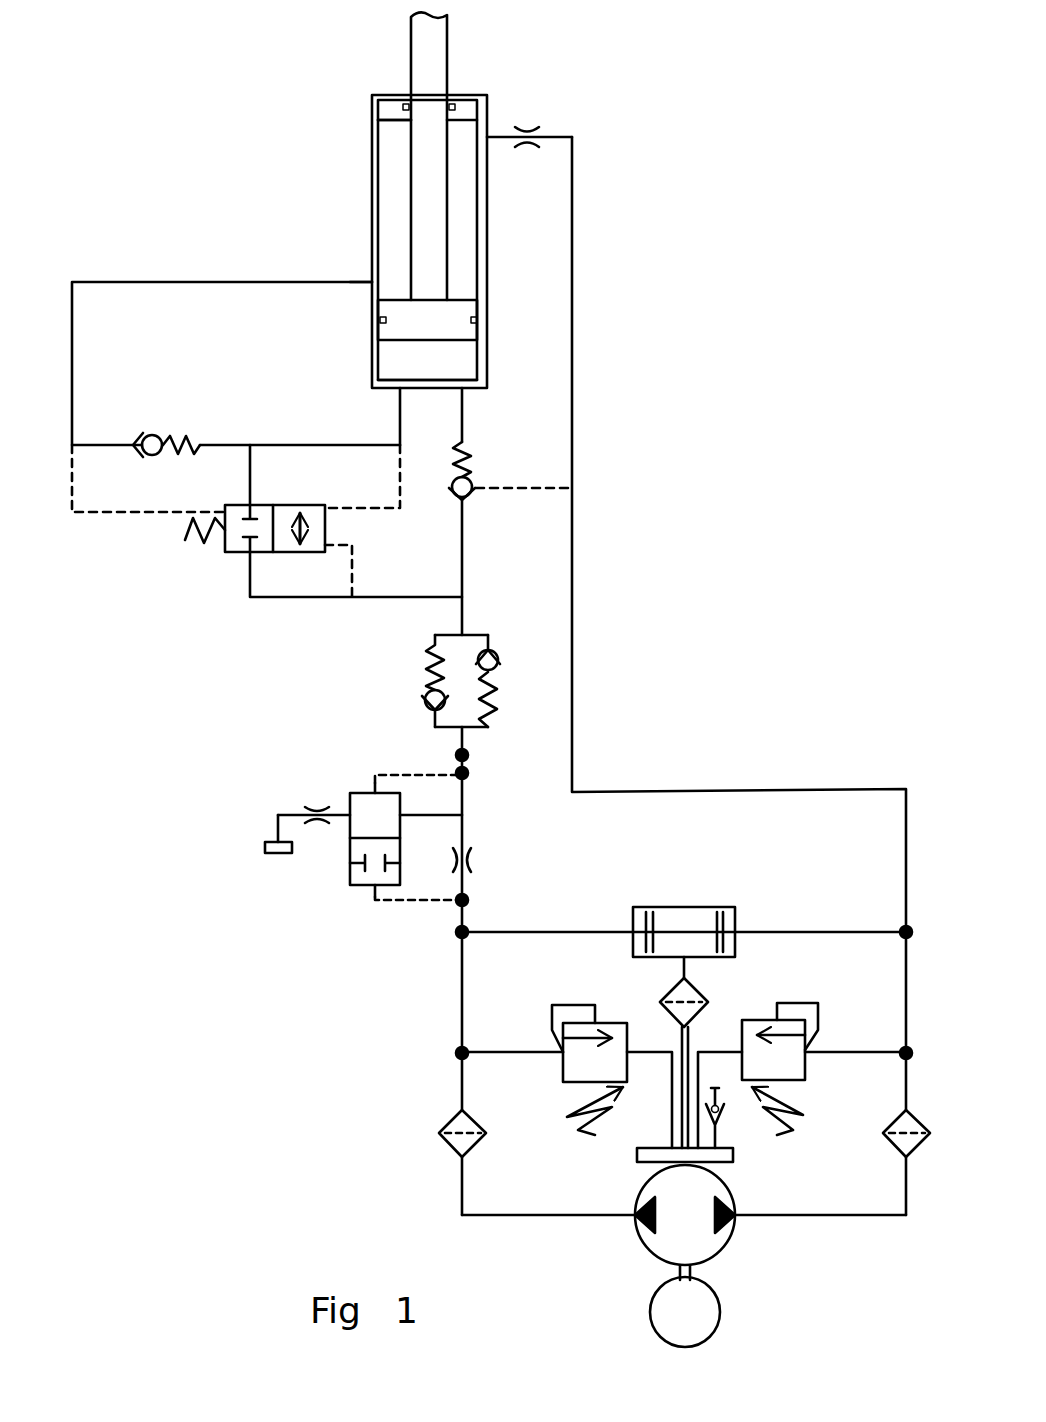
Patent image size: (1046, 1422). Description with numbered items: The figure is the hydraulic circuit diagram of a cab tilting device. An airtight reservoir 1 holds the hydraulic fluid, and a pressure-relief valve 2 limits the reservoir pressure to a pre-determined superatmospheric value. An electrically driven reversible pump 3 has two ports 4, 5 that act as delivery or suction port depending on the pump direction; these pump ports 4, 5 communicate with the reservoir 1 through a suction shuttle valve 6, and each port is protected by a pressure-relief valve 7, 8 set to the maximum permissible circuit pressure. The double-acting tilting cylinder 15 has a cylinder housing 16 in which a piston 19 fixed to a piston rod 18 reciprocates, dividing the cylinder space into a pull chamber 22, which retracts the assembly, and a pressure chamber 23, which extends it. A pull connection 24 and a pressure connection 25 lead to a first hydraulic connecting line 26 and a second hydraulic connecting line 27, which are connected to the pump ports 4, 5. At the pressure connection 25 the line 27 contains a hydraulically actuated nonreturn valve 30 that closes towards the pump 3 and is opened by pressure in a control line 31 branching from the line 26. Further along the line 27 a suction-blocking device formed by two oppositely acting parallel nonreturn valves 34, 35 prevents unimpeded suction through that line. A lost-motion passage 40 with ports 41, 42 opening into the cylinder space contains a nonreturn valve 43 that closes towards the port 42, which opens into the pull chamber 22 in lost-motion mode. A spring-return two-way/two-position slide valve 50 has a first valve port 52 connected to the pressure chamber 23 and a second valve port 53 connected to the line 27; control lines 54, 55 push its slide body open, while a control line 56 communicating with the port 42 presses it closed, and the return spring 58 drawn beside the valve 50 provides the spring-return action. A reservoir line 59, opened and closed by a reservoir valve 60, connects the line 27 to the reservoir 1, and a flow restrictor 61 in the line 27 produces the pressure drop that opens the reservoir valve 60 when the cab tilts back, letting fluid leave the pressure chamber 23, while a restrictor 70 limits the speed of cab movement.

The reservoir 1 is at (479, 994).
The pressure-relief valve 2 is at (734, 1128).
The pump 3 is at (684, 1265).
The pump port 4 is at (614, 1203).
The pump port 5 is at (752, 1203).
The suction shuttle valve 6 is at (701, 993).
The pressure-relief valve 7 is at (612, 1049).
The pressure-relief valve 8 is at (759, 1046).
The tilting cylinder 15 is at (393, 200).
The cylinder housing 16 is at (456, 240).
The piston rod 18 is at (446, 156).
The piston 19 is at (456, 315).
The pull chamber 22 is at (462, 165).
The pressure chamber 23 is at (456, 368).
The pull connection 24 is at (529, 96).
The pressure connection 25 is at (433, 415).
The first hydraulic connecting line 26 is at (739, 676).
The second hydraulic connecting line 27 is at (491, 567).
The nonreturn valve 30 is at (502, 447).
The control line 31 is at (557, 502).
The nonreturn valve 34 is at (512, 681).
The nonreturn valve 35 is at (410, 681).
The lost-motion passage 40 is at (236, 331).
The port 41 is at (367, 416).
The port 42 is at (350, 249).
The nonreturn valve 43 is at (173, 414).
The slide valve 50 is at (308, 576).
The first valve port 52 is at (275, 498).
The second valve port 53 is at (339, 606).
The control line 54 is at (362, 476).
The control line 55 is at (367, 571).
The control line 56 is at (148, 517).
The valve spring 58 is at (192, 567).
The reservoir line 59 is at (431, 846).
The reservoir valve 60 is at (376, 803).
The flow restrictor 61 is at (509, 847).
The restrictor 70 is at (314, 880).